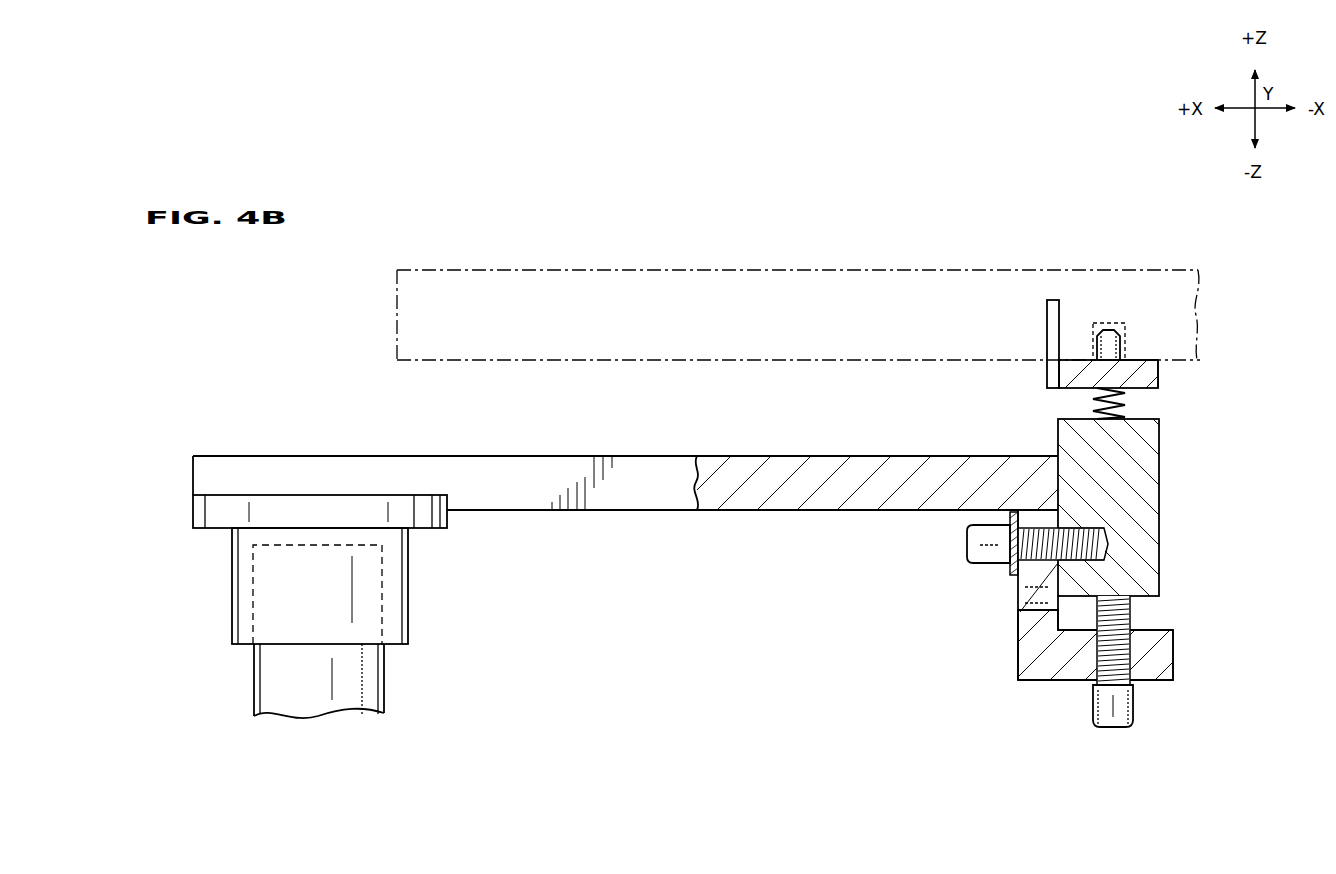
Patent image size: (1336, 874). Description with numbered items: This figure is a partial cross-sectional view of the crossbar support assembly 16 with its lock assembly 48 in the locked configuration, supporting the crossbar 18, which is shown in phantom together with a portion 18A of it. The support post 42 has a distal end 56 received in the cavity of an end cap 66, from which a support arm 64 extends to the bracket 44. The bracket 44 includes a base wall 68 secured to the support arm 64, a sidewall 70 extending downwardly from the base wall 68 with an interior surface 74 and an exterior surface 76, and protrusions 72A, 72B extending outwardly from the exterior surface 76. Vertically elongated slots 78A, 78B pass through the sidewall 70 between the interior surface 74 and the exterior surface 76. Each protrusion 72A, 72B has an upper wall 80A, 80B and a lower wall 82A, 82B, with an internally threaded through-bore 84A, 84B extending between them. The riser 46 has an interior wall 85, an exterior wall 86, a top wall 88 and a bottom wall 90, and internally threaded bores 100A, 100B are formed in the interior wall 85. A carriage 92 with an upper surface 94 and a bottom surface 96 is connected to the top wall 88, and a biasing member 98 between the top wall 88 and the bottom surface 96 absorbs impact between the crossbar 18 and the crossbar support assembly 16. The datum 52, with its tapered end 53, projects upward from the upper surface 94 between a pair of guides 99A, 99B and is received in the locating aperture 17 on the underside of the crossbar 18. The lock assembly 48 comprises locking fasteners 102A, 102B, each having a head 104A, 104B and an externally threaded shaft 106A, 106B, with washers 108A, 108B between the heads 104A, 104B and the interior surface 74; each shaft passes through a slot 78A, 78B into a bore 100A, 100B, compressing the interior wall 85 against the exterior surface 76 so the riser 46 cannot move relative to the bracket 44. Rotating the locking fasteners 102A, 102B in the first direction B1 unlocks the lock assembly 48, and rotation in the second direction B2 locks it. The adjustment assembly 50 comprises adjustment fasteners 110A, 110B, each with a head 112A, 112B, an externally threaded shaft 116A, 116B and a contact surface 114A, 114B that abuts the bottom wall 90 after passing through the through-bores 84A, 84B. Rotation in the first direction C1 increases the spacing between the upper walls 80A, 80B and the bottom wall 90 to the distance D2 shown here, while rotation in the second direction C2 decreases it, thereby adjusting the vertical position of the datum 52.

The crossbar support assembly 16 is at (324, 408).
The locating aperture 17 is at (1107, 304).
The crossbar 18 is at (749, 288).
The payload boundary 18A is at (397, 332).
The support post 42 is at (278, 703).
The bracket 44 is at (440, 428).
The riser 46 is at (1170, 429).
The lock assembly 48 is at (977, 577).
The adjustment assembly 50 is at (1194, 803).
The datum 52 is at (1127, 346).
The tapered end 53 is at (1141, 332).
The distal end 56 is at (380, 548).
The support arm 64 is at (217, 516).
The end cap 66 is at (232, 562).
The base wall 68 is at (497, 465).
The sidewall 70 is at (1058, 626).
The protrusion 72A is at (1225, 655).
The protrusion 72B is at (1173, 640).
The interior surface 74 is at (1018, 669).
The exterior surface 76 is at (1058, 626).
The elongated slot 78A is at (958, 595).
The elongated slot 78B is at (958, 595).
The upper wall 80A is at (1202, 632).
The upper wall 80B is at (1168, 629).
The lower wall 82A is at (1115, 664).
The lower wall 82B is at (1115, 664).
The internally threaded through-bore 84A is at (1183, 656).
The internally threaded through-bore 84B is at (1133, 658).
The interior wall 85 is at (1058, 440).
The exterior wall 86 is at (1159, 472).
The top wall 88 is at (1106, 499).
The bottom wall 90 is at (1145, 601).
The carriage 92 is at (1158, 372).
The upper surface 94 is at (1152, 362).
The bottom surface 96 is at (1158, 388).
The biasing member 98 is at (1095, 410).
The guide 99A is at (994, 344).
The guide 99B is at (1047, 366).
The internally threaded bore 100A is at (1164, 533).
The internally threaded bore 100B is at (1087, 514).
The locking fastener 102A is at (898, 491).
The locking fastener 102B is at (898, 491).
The head 104A is at (849, 497).
The head 104B is at (963, 535).
The externally threaded shaft 106A is at (954, 615).
The externally threaded shaft 106B is at (1018, 592).
The washer 108A is at (955, 496).
The washer 108B is at (1013, 520).
The adjustment fastener 110A is at (1109, 722).
The adjustment fastener 110B is at (1109, 722).
The head 112A is at (1047, 725).
The head 112B is at (1112, 722).
The contact surface 114A is at (1184, 633).
The contact surface 114B is at (1184, 633).
The externally threaded shaft 116A is at (1022, 706).
The externally threaded shaft 116B is at (1097, 668).
The first direction B1 is at (917, 547).
The second direction B2 is at (883, 588).
The first direction C1 is at (1154, 772).
The second direction C2 is at (1097, 785).
The distance D2 is at (1137, 626).